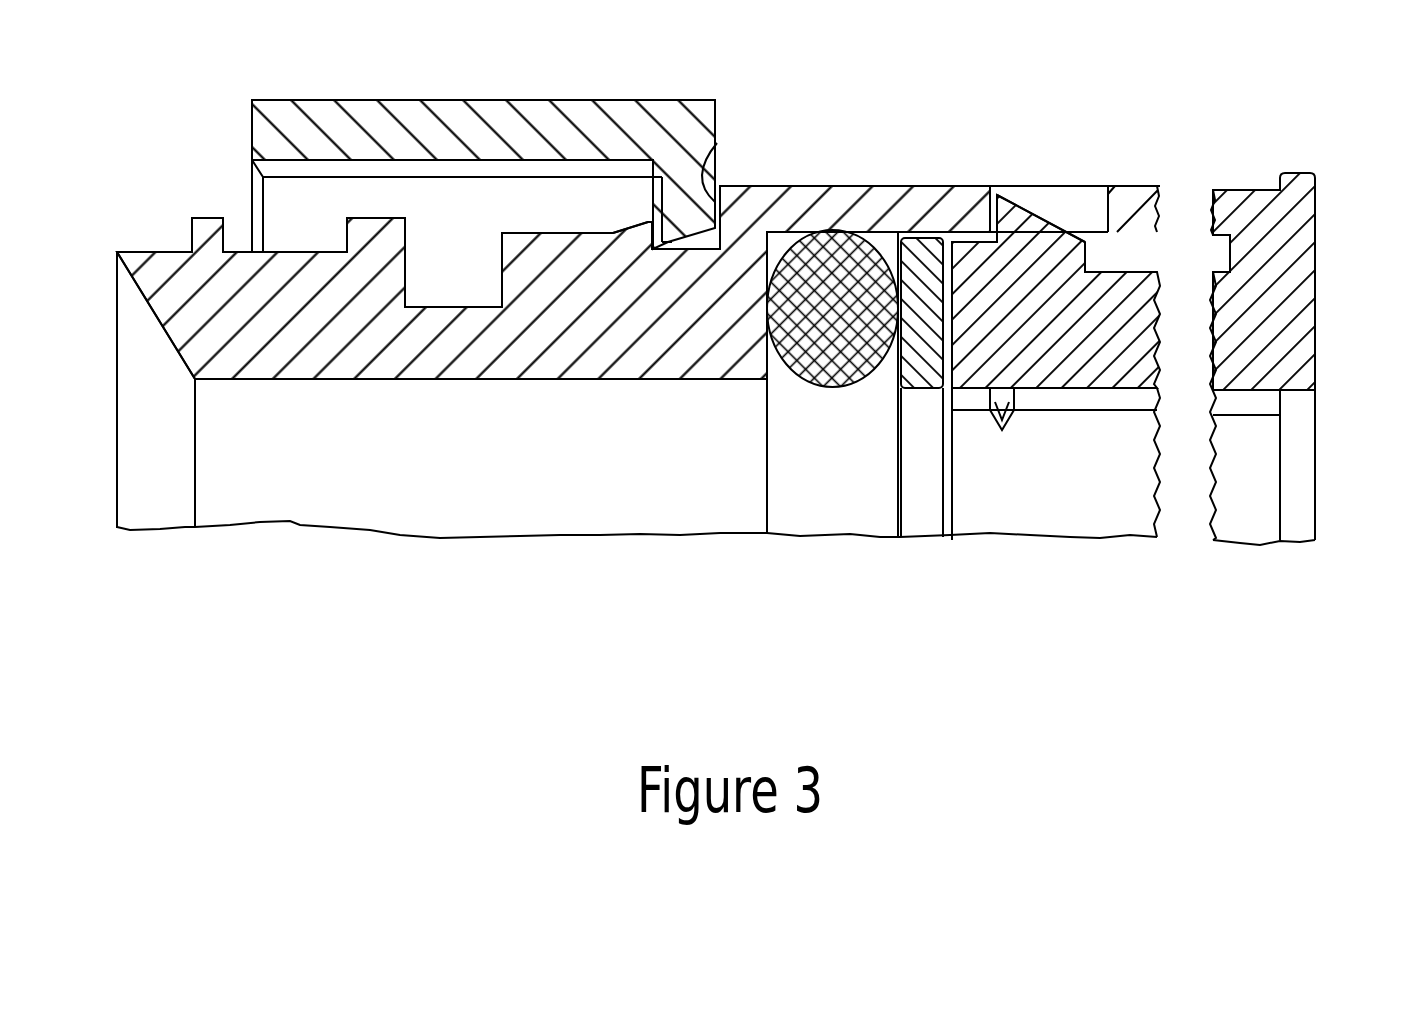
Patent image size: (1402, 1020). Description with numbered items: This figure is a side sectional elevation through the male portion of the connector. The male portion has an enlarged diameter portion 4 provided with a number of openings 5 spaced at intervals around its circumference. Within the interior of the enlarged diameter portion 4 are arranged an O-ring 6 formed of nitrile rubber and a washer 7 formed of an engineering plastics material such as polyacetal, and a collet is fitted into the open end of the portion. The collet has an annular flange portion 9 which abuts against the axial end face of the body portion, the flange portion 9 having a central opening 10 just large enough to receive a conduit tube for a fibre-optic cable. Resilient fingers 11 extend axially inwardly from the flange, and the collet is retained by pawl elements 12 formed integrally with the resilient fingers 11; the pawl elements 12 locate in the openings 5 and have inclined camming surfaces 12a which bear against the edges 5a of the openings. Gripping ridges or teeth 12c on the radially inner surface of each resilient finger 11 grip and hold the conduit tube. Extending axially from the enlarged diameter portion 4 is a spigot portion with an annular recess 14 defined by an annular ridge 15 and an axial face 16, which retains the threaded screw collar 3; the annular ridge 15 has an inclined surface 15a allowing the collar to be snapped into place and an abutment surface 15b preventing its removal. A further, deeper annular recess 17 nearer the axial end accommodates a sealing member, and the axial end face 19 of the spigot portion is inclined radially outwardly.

The threaded collar 3 is at (362, 103).
The enlarged diameter portion 4 is at (953, 198).
The openings 5 is at (1085, 200).
The edges of the openings 5a is at (1123, 243).
The O-ring 6 is at (840, 240).
The washer 7 is at (922, 250).
The annular flange portion 9 is at (1295, 178).
The central opening 10 is at (1298, 406).
The resilient fingers 11 is at (1068, 345).
The pawl elements 12 is at (1017, 258).
The inclined camming surfaces 12a is at (1062, 204).
The gripping ridges or teeth 12c is at (1002, 430).
The annular recess 14 is at (667, 244).
The annular ridge 15 is at (646, 236).
The inclined surface 15a is at (636, 229).
The abutment surface 15b is at (667, 242).
The axial face 16 is at (716, 128).
The annular recess 17 is at (452, 292).
The axial end face 19 is at (160, 333).